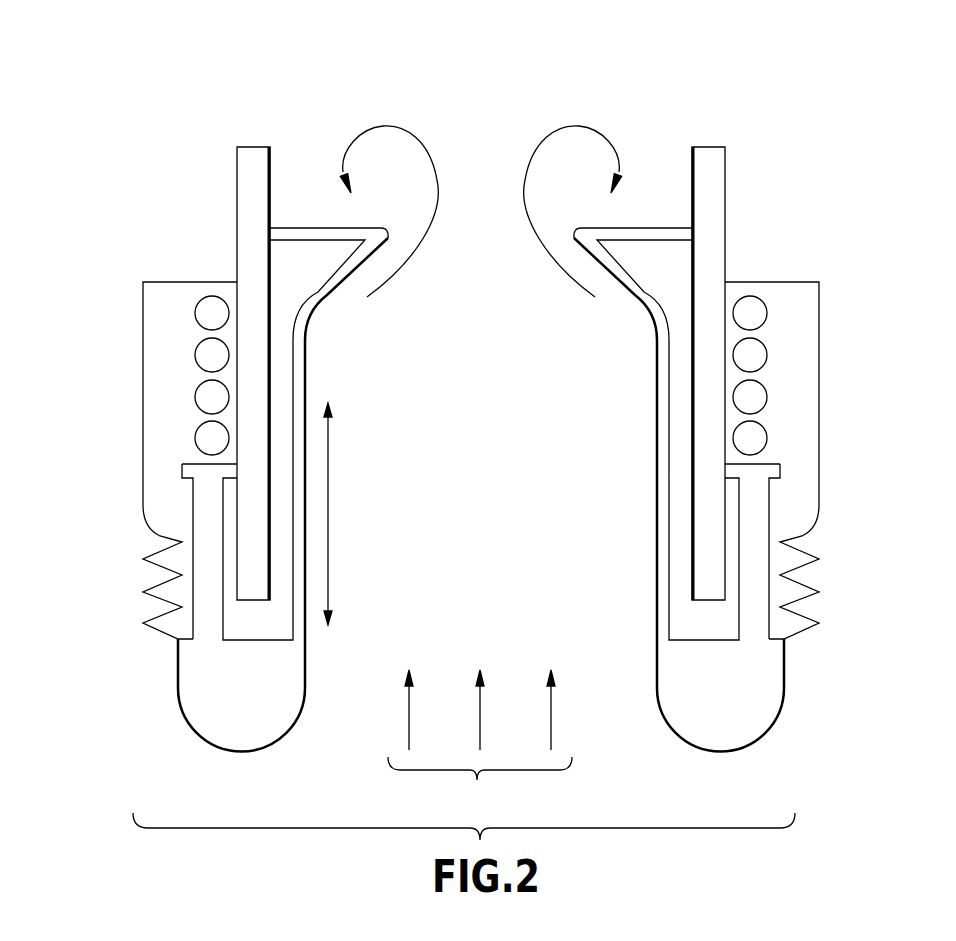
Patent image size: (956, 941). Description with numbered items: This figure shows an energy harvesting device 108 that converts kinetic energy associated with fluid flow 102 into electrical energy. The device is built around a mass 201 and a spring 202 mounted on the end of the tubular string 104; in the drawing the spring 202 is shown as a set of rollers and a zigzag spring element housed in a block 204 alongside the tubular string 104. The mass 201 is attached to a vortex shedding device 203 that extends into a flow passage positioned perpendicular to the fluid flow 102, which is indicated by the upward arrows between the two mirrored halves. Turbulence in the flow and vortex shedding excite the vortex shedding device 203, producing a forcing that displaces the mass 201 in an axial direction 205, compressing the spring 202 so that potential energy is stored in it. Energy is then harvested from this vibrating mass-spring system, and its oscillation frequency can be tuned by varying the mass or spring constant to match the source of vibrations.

The fluid flow 102 is at (480, 741).
The tubular string 104 is at (727, 185).
The energy harvesting device 108 is at (486, 128).
The mass 201 is at (237, 730).
The spring 202 is at (210, 312).
The vortex shedding device 203 is at (327, 297).
The housing with spring 204 is at (143, 400).
The axial direction 205 is at (328, 488).